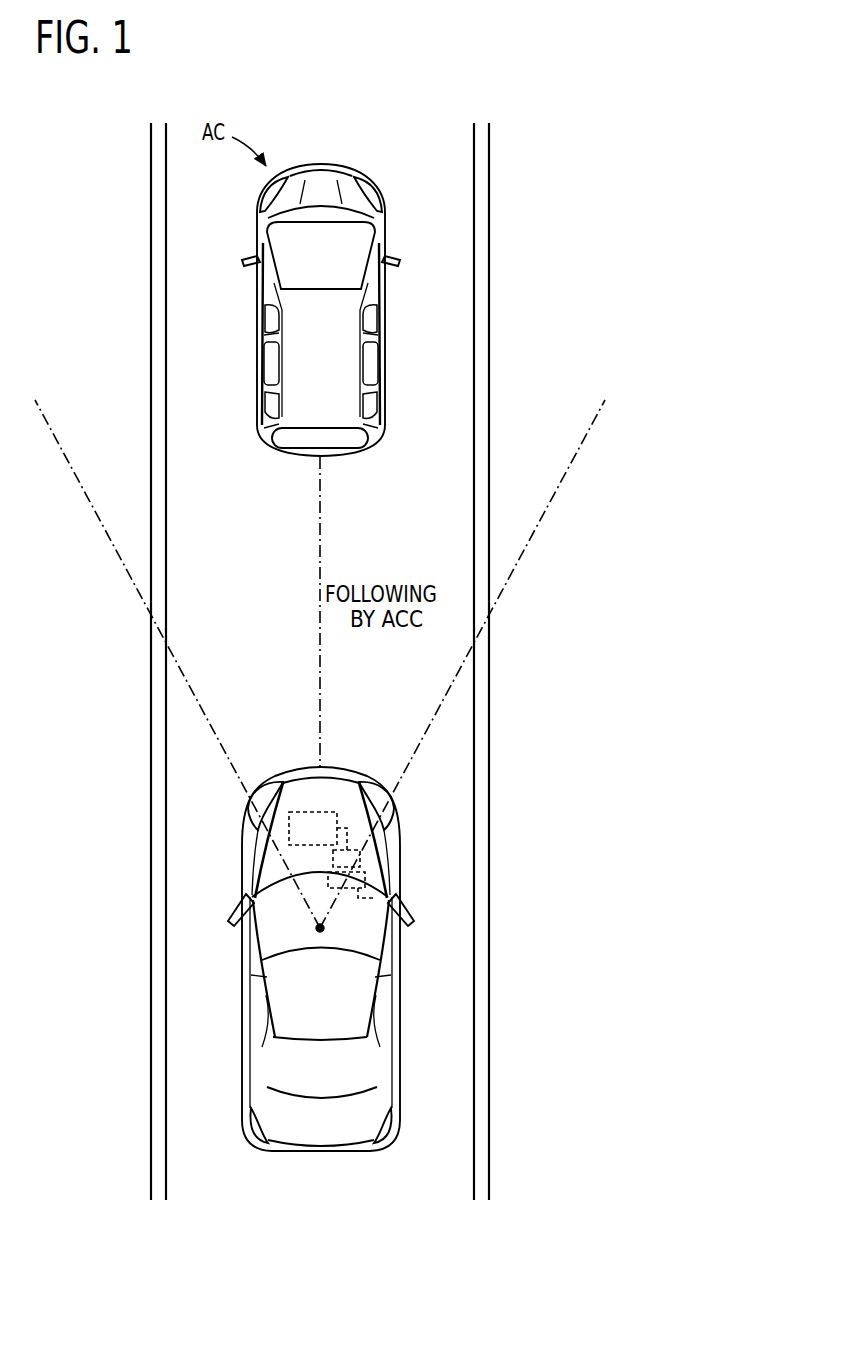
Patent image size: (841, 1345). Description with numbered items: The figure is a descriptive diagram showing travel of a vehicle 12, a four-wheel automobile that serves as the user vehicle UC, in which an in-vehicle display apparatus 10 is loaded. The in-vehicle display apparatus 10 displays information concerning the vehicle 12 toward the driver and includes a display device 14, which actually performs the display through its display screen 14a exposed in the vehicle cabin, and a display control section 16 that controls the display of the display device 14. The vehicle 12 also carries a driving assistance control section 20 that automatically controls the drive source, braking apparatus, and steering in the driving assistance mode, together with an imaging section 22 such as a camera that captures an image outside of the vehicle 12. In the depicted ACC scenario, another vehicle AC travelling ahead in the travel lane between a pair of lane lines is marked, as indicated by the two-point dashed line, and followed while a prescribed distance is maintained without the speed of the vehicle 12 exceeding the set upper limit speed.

The in-vehicle display apparatus 10 is at (368, 873).
The vehicle 12 is at (208, 892).
The display device 14 is at (375, 898).
The display screen 14a is at (411, 919).
The display control section 16 is at (360, 856).
The driving assistance control section 20 is at (318, 812).
The imaging section 22 is at (320, 936).